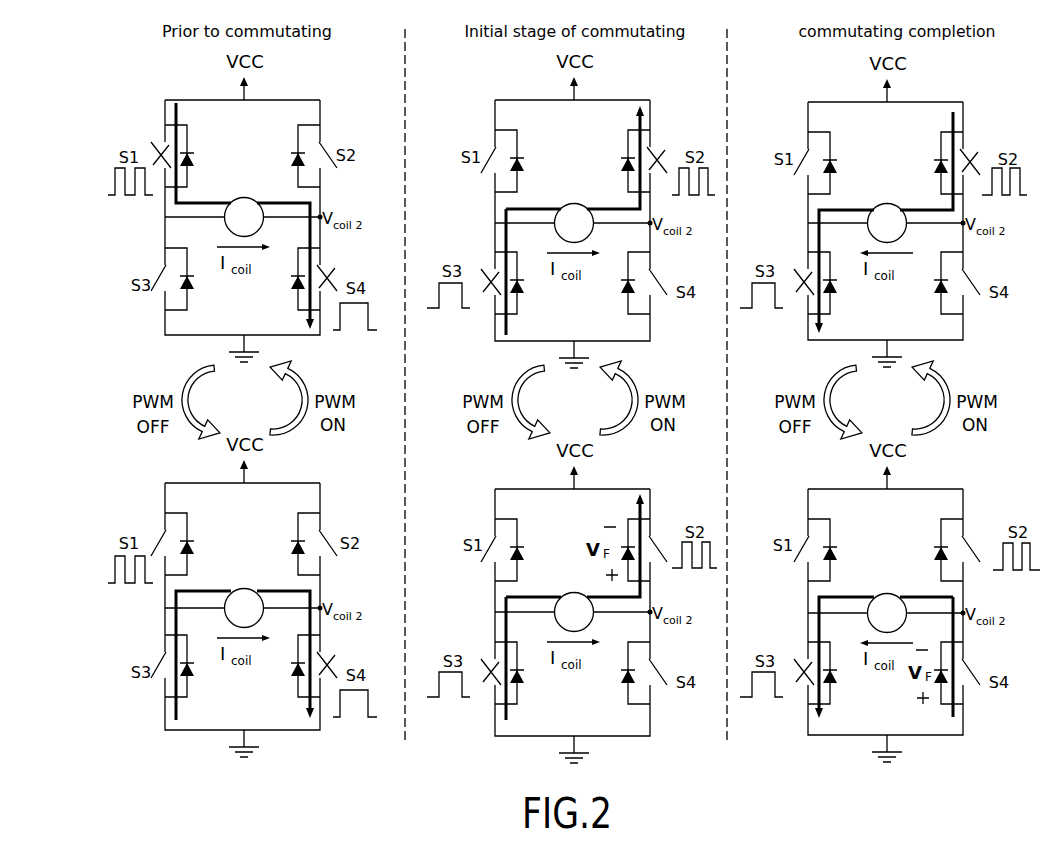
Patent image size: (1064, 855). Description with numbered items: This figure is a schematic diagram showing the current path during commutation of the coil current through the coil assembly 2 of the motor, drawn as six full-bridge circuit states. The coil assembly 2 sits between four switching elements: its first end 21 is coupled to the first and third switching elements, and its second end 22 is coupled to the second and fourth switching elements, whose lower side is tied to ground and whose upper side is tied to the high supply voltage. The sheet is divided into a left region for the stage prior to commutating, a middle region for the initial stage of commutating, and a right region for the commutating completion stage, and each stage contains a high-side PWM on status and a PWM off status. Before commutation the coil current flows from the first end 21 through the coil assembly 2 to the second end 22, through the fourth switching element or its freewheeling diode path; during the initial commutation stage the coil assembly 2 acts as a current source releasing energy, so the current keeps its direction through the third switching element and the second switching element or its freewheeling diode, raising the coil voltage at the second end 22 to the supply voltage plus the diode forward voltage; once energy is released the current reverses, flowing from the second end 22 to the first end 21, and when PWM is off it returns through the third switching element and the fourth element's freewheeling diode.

The coil assembly 2 is at (244, 198).
The first end of the coil assembly 21 is at (516, 425).
The second end of the coil assembly 22 is at (614, 425).